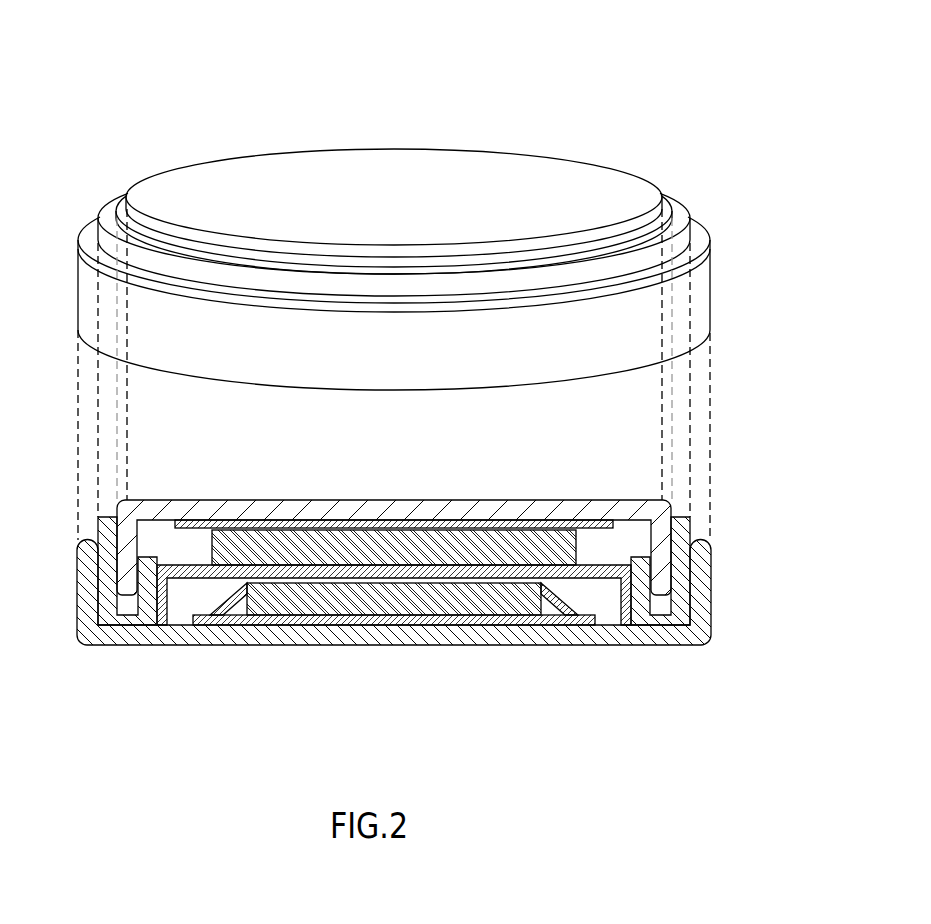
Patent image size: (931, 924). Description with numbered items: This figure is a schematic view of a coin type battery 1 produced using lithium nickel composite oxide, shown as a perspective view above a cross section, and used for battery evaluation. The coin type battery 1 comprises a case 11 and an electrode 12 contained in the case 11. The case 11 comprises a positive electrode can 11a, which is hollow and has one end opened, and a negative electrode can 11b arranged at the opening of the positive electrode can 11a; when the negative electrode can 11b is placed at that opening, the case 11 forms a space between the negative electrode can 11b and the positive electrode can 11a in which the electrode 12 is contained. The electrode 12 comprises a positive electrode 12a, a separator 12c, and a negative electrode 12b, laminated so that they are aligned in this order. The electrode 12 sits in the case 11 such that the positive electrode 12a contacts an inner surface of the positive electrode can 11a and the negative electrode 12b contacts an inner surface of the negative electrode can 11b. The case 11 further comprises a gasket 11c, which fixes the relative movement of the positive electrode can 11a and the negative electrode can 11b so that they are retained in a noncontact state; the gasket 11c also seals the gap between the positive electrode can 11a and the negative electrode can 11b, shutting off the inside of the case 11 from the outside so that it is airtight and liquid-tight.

The coin type battery 1 is at (409, 86).
The case 11 is at (790, 442).
The positive electrode can 11a is at (703, 300).
The negative electrode can 11b is at (525, 187).
The gasket 11c is at (108, 208).
The electrode 12 is at (627, 730).
The positive electrode 12a is at (478, 608).
The negative electrode 12b is at (568, 552).
The separator 12c is at (522, 570).